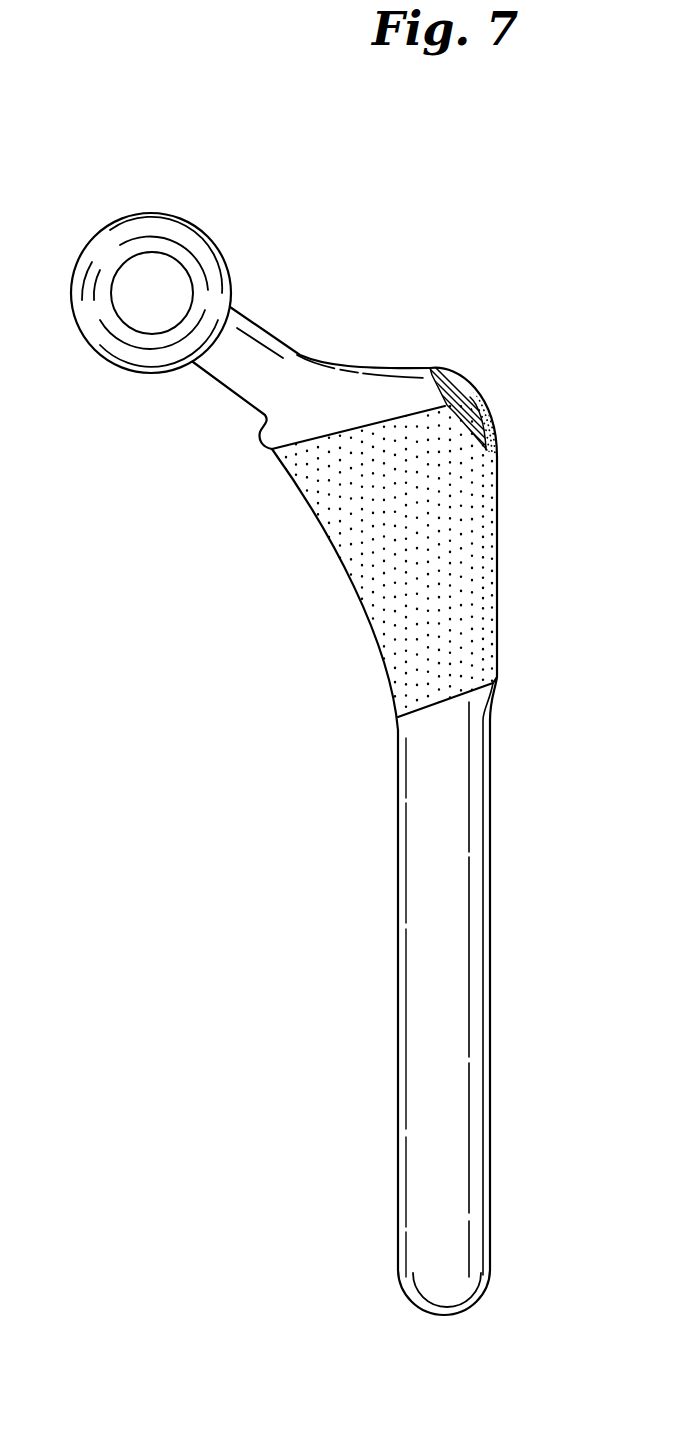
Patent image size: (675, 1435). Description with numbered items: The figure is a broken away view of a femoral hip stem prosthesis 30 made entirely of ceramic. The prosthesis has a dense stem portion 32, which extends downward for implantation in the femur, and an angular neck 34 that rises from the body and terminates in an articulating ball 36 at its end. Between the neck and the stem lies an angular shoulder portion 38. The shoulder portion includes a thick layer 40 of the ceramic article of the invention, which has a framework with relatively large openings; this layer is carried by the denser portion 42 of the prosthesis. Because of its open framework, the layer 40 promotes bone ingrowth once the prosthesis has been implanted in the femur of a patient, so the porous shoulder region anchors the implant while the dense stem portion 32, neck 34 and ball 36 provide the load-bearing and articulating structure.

The femoral hip stem prosthesis 30 is at (253, 552).
The dense stem portion 32 is at (400, 1050).
The angular neck 34 is at (270, 336).
The articulating ball 36 is at (121, 366).
The angular shoulder portion 38 is at (497, 517).
The thick layer 40 is at (500, 418).
The denser portion 42 is at (460, 372).